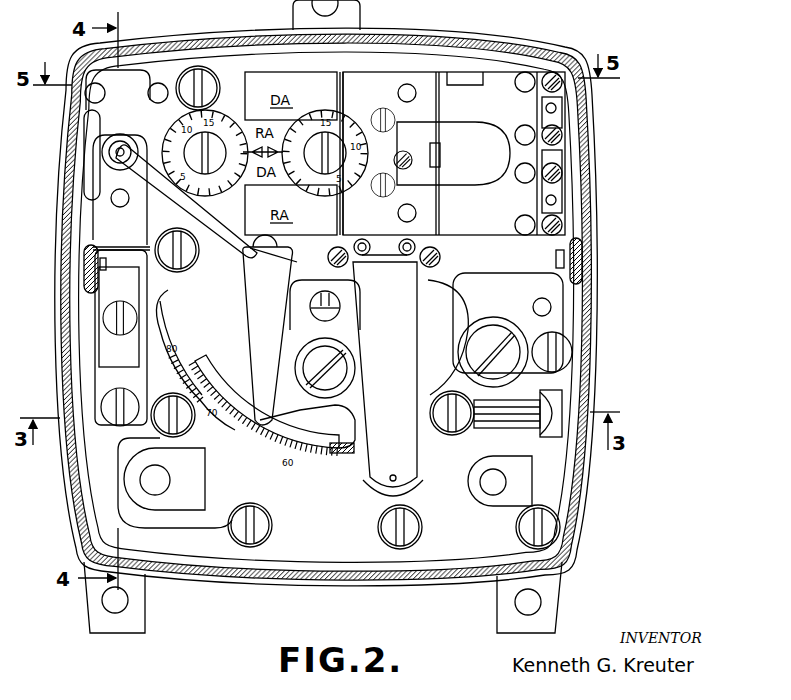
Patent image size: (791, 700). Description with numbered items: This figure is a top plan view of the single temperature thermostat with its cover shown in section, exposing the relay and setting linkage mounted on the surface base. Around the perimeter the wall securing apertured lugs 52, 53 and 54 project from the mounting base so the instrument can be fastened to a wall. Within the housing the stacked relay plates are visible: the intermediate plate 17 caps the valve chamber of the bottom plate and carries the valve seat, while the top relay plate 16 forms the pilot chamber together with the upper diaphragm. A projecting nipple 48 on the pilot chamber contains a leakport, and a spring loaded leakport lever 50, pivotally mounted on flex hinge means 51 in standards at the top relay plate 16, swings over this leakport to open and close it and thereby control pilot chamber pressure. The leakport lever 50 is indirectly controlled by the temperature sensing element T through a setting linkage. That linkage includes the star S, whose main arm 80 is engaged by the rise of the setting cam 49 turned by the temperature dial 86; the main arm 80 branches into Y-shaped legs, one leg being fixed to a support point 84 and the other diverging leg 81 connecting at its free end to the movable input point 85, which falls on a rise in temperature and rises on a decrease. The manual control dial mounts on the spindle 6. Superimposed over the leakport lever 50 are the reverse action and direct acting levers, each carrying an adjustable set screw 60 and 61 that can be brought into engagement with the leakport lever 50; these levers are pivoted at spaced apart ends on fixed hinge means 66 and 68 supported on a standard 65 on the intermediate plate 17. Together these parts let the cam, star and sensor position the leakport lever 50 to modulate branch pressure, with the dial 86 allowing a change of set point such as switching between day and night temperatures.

The top relay plate 16 is at (322, 536).
The wall securing apertured lug 52 is at (357, 2).
The wall securing apertured lug 53 is at (147, 614).
The wall securing apertured lug 54 is at (497, 608).
The adjustable set screw 61 is at (378, 112).
The adjustable set screw 60 is at (381, 194).
The support point 84 is at (412, 155).
The leg of the star 81 is at (415, 168).
The fixed hinge means 66 is at (548, 90).
The standard 65 is at (548, 172).
The fixed hinge means 68 is at (548, 207).
The movable input point 85 is at (93, 160).
The temperature sensing element T is at (93, 320).
The main arm 80 is at (276, 318).
The star S is at (262, 266).
The leakport lever 50 is at (400, 384).
The flex hinge means 51 is at (422, 252).
The projecting nipple 48 is at (410, 488).
The spindle 6 is at (340, 306).
The setting cam 49 is at (316, 440).
The temperature dial 86 is at (272, 455).
The intermediate plate 17 is at (452, 436).